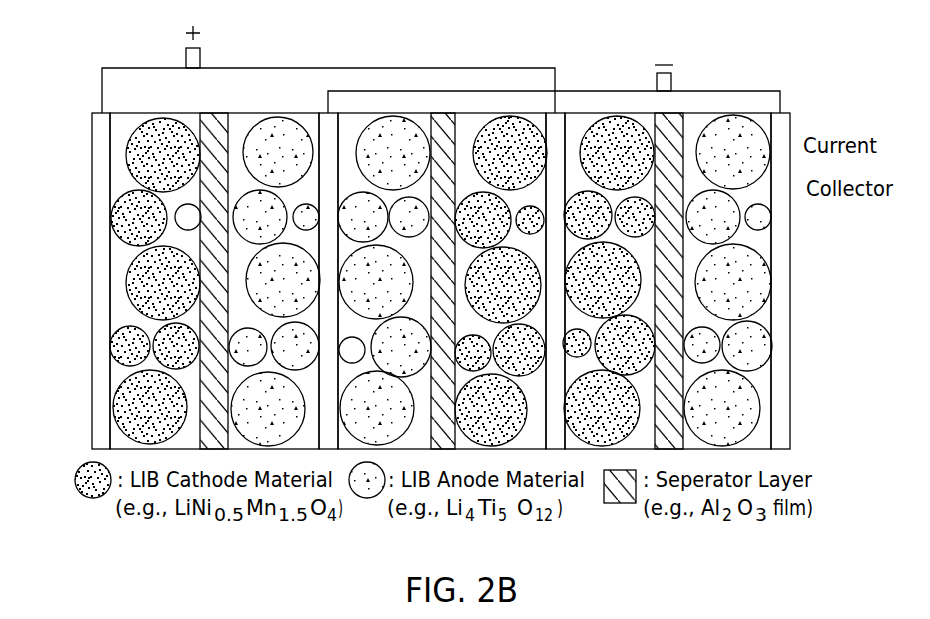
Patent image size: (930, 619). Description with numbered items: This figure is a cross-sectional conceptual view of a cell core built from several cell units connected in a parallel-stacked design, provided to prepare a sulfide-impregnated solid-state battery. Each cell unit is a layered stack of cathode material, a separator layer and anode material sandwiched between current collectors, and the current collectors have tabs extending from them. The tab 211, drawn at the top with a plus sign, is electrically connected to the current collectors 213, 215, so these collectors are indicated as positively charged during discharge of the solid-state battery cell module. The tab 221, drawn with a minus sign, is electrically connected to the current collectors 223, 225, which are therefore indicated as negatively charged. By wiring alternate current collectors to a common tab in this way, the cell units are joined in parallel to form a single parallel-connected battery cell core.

The tab 211 is at (190, 60).
The tab 221 is at (671, 84).
The current collector 213 is at (100, 283).
The current collector 223 is at (325, 315).
The current collector 215 is at (553, 242).
The current collector 225 is at (780, 383).